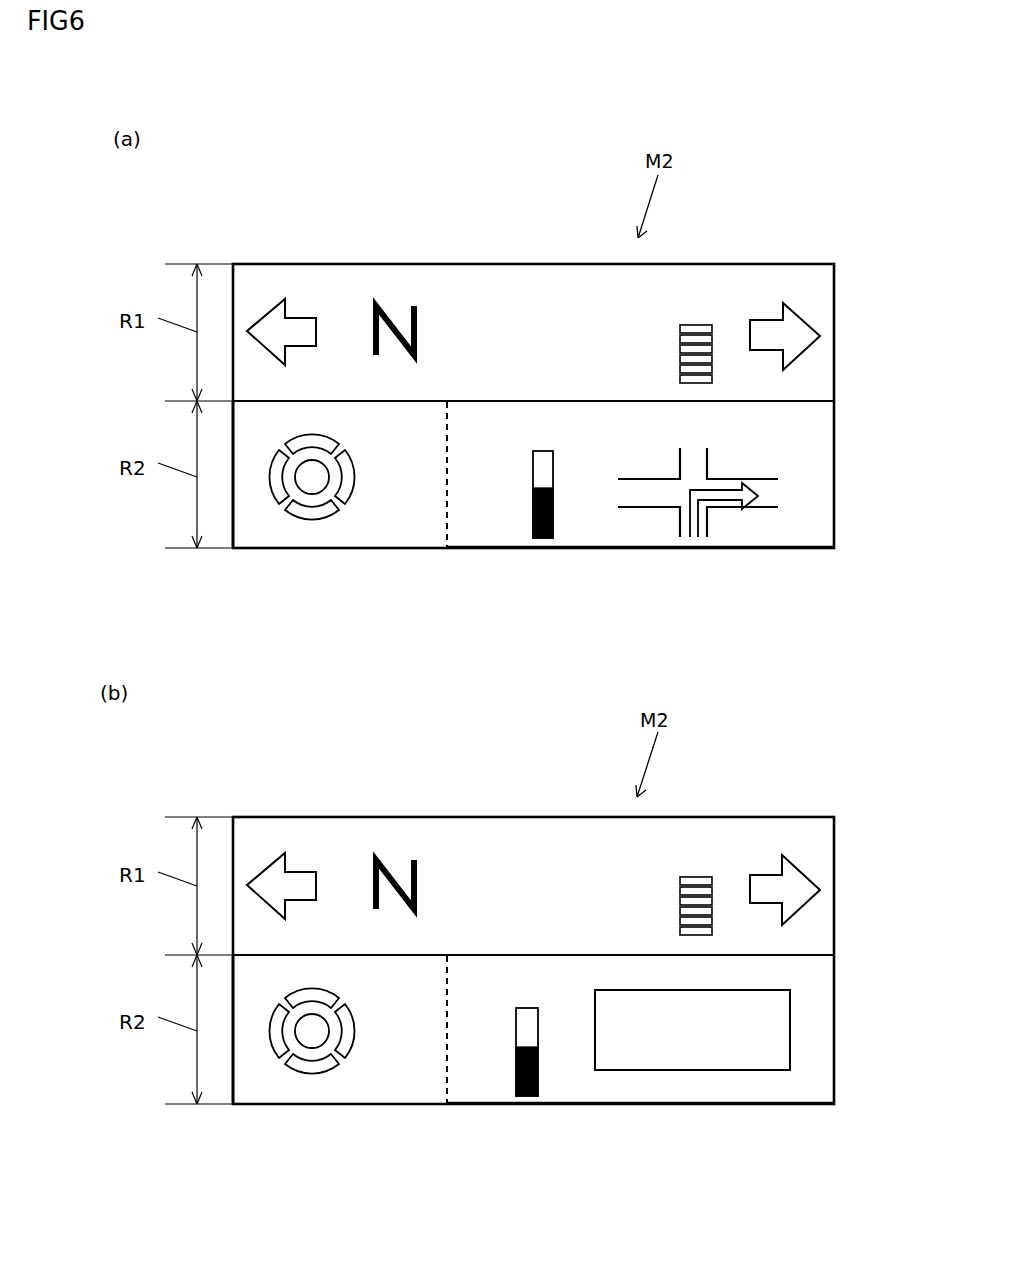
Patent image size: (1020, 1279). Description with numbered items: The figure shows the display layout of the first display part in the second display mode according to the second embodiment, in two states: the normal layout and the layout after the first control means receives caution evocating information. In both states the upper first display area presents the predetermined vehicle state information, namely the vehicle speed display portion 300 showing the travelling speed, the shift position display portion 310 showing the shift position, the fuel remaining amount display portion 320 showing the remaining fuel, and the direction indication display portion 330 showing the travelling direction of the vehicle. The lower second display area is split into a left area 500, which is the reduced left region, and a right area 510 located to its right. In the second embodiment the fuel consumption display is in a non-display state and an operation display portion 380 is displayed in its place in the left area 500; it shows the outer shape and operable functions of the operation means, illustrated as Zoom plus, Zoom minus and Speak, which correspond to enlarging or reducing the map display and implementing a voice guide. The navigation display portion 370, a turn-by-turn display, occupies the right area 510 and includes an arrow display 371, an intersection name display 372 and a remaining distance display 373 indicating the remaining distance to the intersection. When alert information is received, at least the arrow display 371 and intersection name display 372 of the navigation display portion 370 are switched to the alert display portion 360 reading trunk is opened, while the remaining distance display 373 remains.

The vehicle speed display portion 300 is at (546, 866).
The shift position display portion 310 is at (410, 862).
The fuel remaining amount display portion 320 is at (702, 879).
The direction indication display portion 330 is at (790, 880).
The alert display portion 360 is at (720, 1045).
The navigation display portion 370 is at (749, 525).
The arrow display 371 is at (697, 524).
The intersection name display 372 is at (798, 436).
The remaining distance display 373 is at (541, 539).
The operation display portion 380 is at (325, 512).
The left area 500 is at (262, 535).
The right area 510 is at (620, 535).